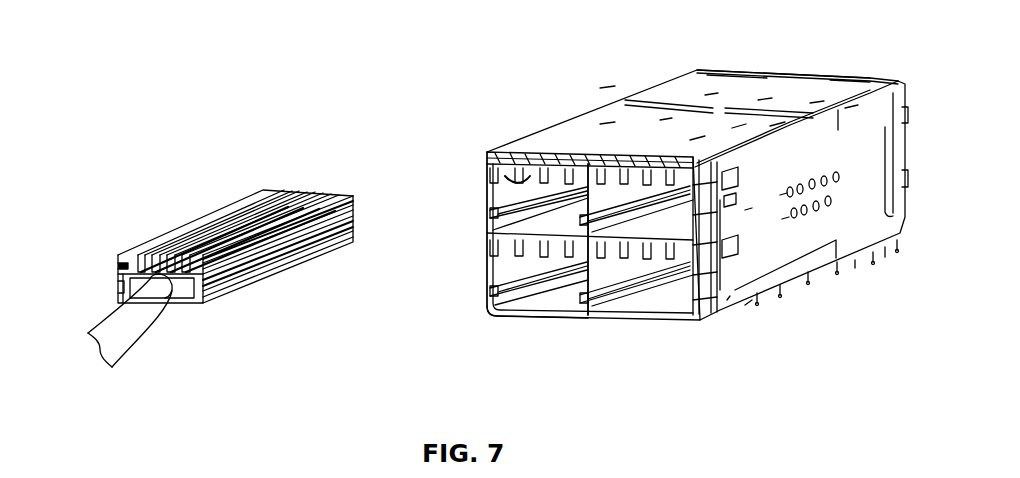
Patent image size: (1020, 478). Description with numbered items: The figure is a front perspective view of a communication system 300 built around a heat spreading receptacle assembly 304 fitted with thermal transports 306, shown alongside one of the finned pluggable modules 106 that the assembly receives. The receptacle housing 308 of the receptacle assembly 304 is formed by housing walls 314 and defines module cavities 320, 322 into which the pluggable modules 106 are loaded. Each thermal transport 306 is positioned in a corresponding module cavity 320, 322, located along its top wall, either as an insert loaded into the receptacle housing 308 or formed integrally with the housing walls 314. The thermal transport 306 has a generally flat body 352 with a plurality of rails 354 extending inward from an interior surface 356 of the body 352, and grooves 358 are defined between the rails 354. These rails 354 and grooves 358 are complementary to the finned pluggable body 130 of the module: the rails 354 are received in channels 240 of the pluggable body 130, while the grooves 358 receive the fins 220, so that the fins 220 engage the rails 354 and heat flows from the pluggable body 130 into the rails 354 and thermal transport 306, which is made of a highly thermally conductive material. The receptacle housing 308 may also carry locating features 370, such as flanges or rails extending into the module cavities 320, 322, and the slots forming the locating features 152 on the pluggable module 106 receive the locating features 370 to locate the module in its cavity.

The pluggable module 106 is at (183, 205).
The fins 220 is at (257, 211).
The channels 240 is at (125, 270).
The pluggable body 130 is at (191, 293).
The locating features 152 is at (229, 291).
The communication system 300 is at (562, 72).
The receptacle assembly 304 is at (785, 67).
The thermal transport 306 is at (487, 158).
The receptacle housing 308 is at (683, 88).
The housing walls 314 is at (617, 115).
The module cavity 320 is at (651, 303).
The module cavity 322 is at (583, 256).
The body 352 is at (555, 172).
The rails 354 is at (551, 186).
The interior surface 356 is at (516, 177).
The grooves 358 is at (554, 244).
The locating features 370 is at (519, 298).